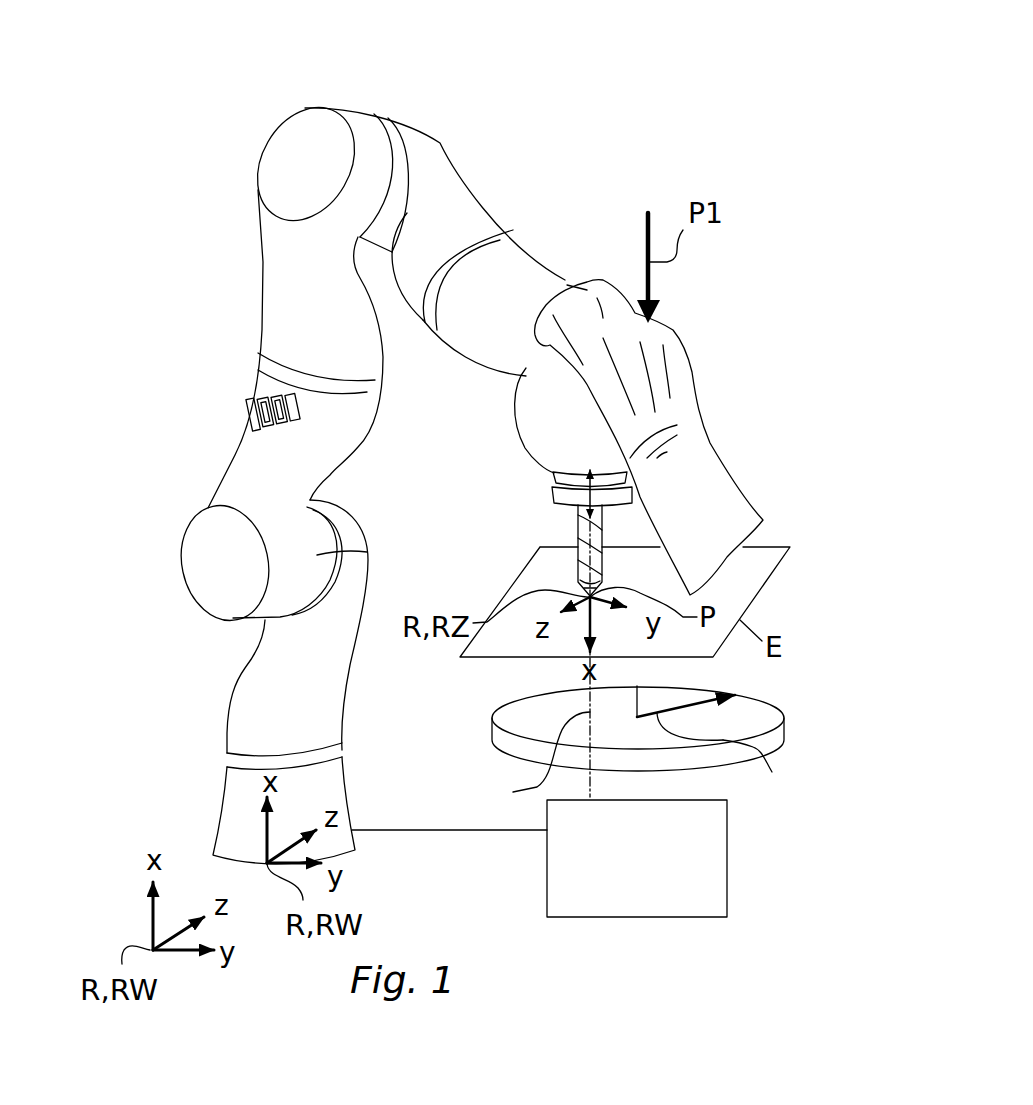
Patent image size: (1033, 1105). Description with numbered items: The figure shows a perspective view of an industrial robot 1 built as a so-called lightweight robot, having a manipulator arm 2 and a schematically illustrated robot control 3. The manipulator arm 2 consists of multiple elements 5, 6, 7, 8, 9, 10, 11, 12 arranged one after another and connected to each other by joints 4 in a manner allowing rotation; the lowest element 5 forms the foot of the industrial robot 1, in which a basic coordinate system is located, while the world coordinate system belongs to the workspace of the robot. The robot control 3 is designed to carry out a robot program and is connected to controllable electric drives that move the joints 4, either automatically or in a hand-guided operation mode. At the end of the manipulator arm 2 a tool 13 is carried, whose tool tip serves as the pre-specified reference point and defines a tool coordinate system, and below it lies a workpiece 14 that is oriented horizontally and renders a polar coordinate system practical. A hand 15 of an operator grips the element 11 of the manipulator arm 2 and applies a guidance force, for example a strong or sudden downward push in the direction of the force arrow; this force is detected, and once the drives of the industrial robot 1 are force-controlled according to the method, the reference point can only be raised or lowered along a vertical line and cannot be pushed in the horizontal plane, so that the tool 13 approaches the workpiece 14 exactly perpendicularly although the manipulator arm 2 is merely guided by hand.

The industrial robot 1 is at (655, 141).
The manipulator arm 2 is at (243, 355).
The robot control 3 is at (558, 862).
The joints 4 is at (392, 133).
The element 5 is at (240, 803).
The element 6 is at (268, 670).
The element 7 is at (240, 460).
The element 8 is at (277, 285).
The element 9 is at (460, 185).
The element 10 is at (547, 282).
The element 11 is at (527, 402).
The element 12 is at (567, 507).
The tool 13 is at (597, 570).
The workpiece 14 is at (525, 715).
The hand 15 is at (685, 392).